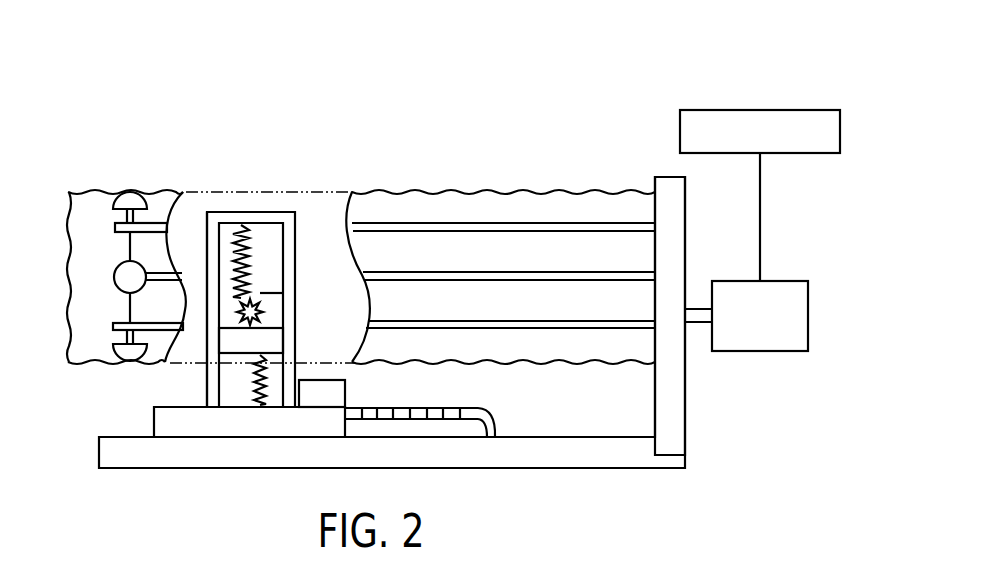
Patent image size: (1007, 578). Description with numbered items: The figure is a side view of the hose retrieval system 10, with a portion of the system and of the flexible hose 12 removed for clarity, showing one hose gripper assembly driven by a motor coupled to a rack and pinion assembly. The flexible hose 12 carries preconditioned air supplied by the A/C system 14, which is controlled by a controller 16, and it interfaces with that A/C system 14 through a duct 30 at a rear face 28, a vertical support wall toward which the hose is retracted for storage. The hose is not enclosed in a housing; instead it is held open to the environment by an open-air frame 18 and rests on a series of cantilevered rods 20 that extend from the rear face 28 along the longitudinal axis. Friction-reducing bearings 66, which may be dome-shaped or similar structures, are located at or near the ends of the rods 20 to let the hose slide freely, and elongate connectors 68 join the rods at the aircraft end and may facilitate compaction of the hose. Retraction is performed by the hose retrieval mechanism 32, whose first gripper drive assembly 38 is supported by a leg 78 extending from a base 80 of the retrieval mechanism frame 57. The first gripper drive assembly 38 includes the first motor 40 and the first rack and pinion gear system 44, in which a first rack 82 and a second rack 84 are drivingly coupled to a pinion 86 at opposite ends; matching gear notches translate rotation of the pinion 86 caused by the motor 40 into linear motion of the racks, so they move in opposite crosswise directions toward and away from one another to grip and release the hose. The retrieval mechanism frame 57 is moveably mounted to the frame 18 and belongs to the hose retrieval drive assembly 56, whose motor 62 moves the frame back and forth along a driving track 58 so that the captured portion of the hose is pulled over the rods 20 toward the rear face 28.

The hose retrieval system 10 is at (596, 114).
The flexible hose 12 is at (500, 244).
The air conditioning (A/C) system 14 is at (782, 281).
The controller 16 is at (775, 110).
The open-air frame 18 is at (445, 468).
The cantilevered rods 20 is at (533, 216).
The rear face 28 is at (685, 422).
The duct 30 is at (700, 308).
The hose retrieval mechanism 32 is at (256, 319).
The first gripper drive assembly 38 is at (232, 365).
The first motor 40 is at (273, 342).
The first rack and pinion gear system 44 is at (259, 284).
The hose retrieval drive assembly 56 is at (452, 405).
The retrieval mechanism frame 57 is at (252, 212).
The first driving track 58 is at (519, 412).
The motor 62 is at (345, 397).
The friction-reducing bearings 66 is at (111, 277).
The elongate connectors 68 is at (127, 248).
The leg 78 is at (212, 255).
The base 80 is at (185, 430).
The first rack 82 is at (228, 237).
The second rack 84 is at (273, 400).
The pinion 86 is at (265, 310).